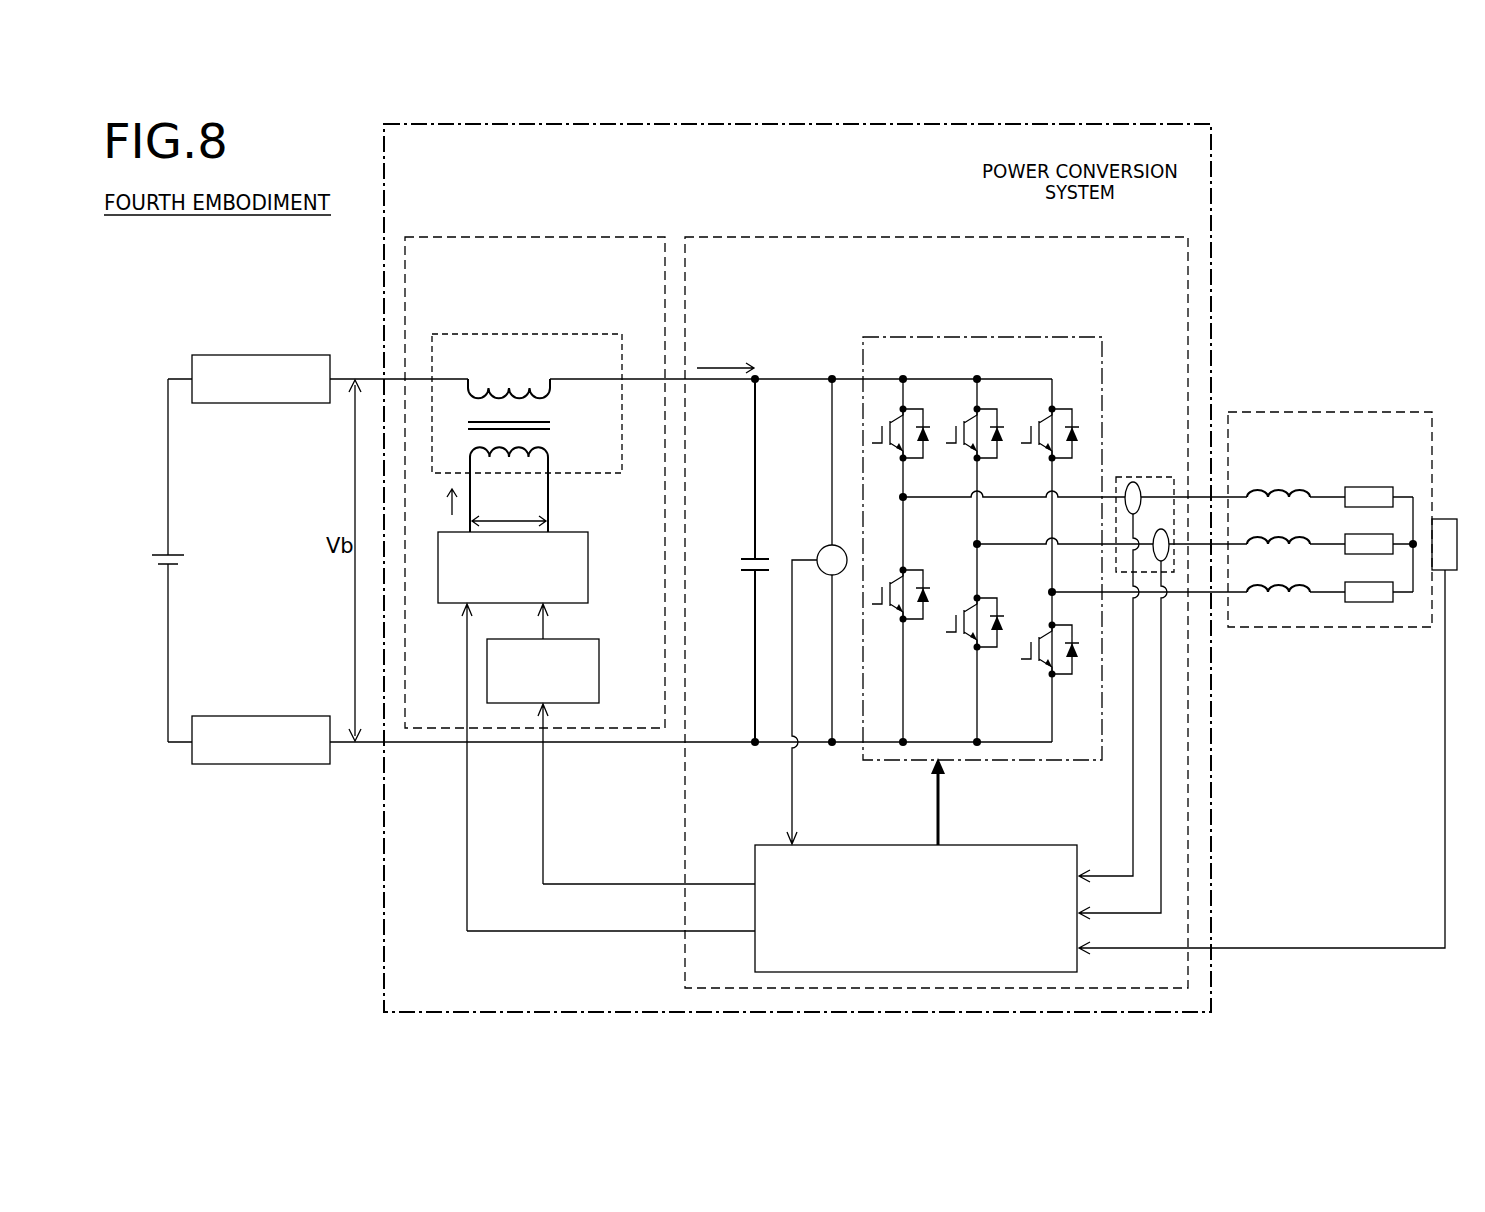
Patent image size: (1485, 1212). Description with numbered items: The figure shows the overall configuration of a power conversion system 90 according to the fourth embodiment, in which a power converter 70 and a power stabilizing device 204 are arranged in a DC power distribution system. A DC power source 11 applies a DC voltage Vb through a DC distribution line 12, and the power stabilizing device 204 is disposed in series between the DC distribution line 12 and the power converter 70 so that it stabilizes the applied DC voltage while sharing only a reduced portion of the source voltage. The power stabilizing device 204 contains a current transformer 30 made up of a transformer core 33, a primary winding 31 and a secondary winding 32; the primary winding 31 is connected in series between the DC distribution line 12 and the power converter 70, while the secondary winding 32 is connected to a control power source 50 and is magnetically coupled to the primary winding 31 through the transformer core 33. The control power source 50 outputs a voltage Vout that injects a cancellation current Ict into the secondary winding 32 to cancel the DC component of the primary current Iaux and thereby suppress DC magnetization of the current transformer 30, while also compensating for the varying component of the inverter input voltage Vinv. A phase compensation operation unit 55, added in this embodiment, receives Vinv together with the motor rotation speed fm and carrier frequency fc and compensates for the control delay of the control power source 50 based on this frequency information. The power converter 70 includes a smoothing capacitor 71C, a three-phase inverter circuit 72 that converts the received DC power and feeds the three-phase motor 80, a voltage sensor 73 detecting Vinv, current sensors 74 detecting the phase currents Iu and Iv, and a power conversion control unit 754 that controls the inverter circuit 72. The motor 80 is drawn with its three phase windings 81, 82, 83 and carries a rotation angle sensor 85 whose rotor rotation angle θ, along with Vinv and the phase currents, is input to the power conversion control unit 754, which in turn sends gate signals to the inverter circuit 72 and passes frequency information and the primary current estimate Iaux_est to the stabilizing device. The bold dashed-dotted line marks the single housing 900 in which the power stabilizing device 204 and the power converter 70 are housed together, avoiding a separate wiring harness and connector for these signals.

The DC power source 11 is at (162, 552).
The DC distribution line 12 is at (258, 356).
The power stabilizing device 204 is at (526, 237).
The current transformer 30 is at (505, 334).
The primary winding 31 is at (550, 396).
The secondary winding 32 is at (550, 448).
The transformer core 33 is at (550, 428).
The control power source 50 is at (588, 568).
The phase compensation operation unit 55 is at (598, 668).
The power converter 70 is at (894, 237).
The smoothing capacitor 71C is at (750, 554).
The inverter circuit 72 is at (1040, 332).
The voltage sensor 73 is at (825, 546).
The current sensors 74 is at (1140, 475).
The power conversion control unit 754 is at (870, 844).
The three-phase motor 80 is at (1322, 411).
The U-phase winding 81 is at (1278, 487).
The V-phase winding 82 is at (1278, 534).
The W-phase winding 83 is at (1278, 581).
The rotation angle sensor 85 is at (1444, 532).
The power conversion system 90 is at (518, 180).
The housing 900 is at (384, 965).